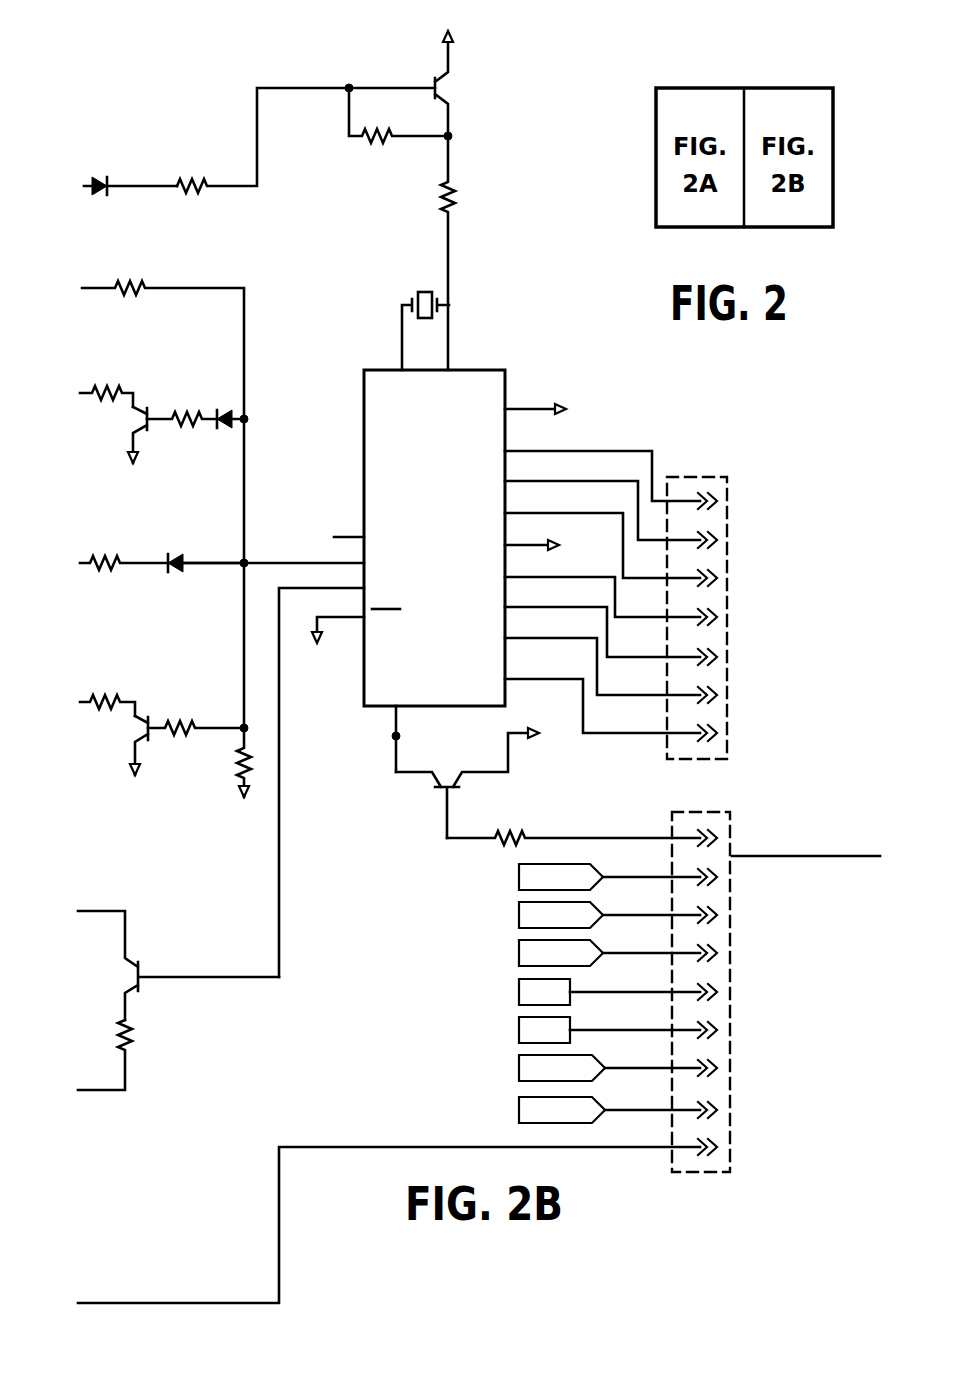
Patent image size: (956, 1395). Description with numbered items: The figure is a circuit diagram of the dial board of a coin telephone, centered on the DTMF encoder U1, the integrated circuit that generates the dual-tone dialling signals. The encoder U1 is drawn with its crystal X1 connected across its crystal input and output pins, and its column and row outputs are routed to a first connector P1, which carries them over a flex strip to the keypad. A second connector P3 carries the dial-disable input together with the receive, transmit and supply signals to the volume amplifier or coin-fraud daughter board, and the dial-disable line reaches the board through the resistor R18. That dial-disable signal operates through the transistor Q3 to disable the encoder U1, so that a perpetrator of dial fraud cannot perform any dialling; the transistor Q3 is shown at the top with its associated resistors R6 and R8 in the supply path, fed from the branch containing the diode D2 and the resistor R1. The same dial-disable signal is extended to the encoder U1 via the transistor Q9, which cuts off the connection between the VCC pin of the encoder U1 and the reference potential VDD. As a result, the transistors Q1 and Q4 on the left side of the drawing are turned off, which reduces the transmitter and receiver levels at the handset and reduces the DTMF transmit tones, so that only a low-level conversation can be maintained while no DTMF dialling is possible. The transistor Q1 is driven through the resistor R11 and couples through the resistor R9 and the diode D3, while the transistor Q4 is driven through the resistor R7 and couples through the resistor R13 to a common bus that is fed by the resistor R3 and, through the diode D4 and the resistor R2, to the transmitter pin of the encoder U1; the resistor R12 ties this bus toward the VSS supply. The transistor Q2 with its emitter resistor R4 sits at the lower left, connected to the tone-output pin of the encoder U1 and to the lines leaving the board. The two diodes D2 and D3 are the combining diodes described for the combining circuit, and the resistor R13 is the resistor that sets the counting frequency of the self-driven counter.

The combining diode D2 is at (130, 172).
The resistor R1 is at (306, 140).
The transistor Q3 is at (459, 70).
The resistor R6 is at (398, 127).
The resistor R8 is at (467, 253).
The crystal X1 is at (425, 317).
The DTMF encoder U1 is at (441, 656).
The connector P1 to keypad flex strip P1 is at (772, 602).
The transistor Q9 is at (488, 770).
The resistor R18 is at (573, 816).
The connector P3 to volume amplifier or coin-fraud daughter board P3 is at (492, 1042).
The resistor R3 is at (163, 491).
The resistor R11 is at (108, 384).
The transistor Q1 is at (144, 436).
The resistor R9 is at (182, 434).
The combining diode D3 is at (228, 403).
The resistor R2 is at (124, 575).
The diode D4 is at (202, 580).
The resistor R7 is at (107, 692).
The transistor Q4 is at (146, 747).
The resistor R13 is at (198, 743).
The resistor R12 (100K) R12 is at (255, 753).
The transistor Q2 is at (178, 965).
The resistor R4 is at (127, 1055).